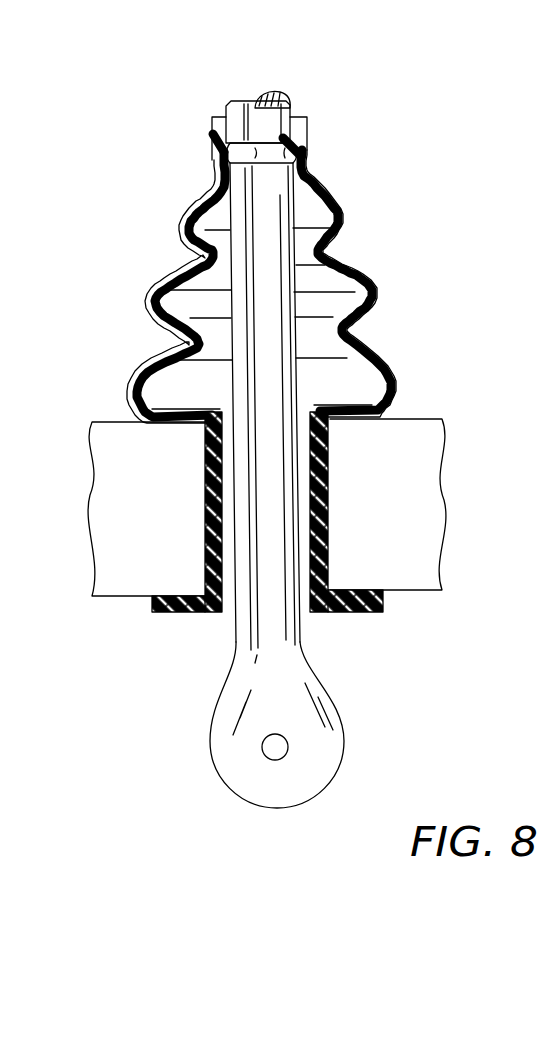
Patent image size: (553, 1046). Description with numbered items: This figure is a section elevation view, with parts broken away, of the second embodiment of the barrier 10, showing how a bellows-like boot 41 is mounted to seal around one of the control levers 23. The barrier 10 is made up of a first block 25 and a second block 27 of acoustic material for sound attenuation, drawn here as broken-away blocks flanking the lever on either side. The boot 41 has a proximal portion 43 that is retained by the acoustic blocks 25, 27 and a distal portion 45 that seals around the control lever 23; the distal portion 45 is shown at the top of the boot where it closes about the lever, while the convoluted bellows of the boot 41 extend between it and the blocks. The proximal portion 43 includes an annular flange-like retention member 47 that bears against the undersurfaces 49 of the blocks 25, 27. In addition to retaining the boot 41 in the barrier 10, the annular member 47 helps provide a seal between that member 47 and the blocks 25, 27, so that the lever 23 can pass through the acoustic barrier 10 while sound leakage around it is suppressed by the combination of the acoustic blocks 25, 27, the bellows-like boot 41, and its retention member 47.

The barrier 10 is at (97, 646).
The control lever 23 is at (283, 94).
The first block 25 is at (92, 598).
The second block 27 is at (447, 563).
The bellows-like boot 41 is at (381, 297).
The proximal portion 43 is at (207, 660).
The distal portion 45 is at (310, 137).
The annular flange-like retention member 47 is at (350, 612).
The undersurfaces 49 is at (128, 600).